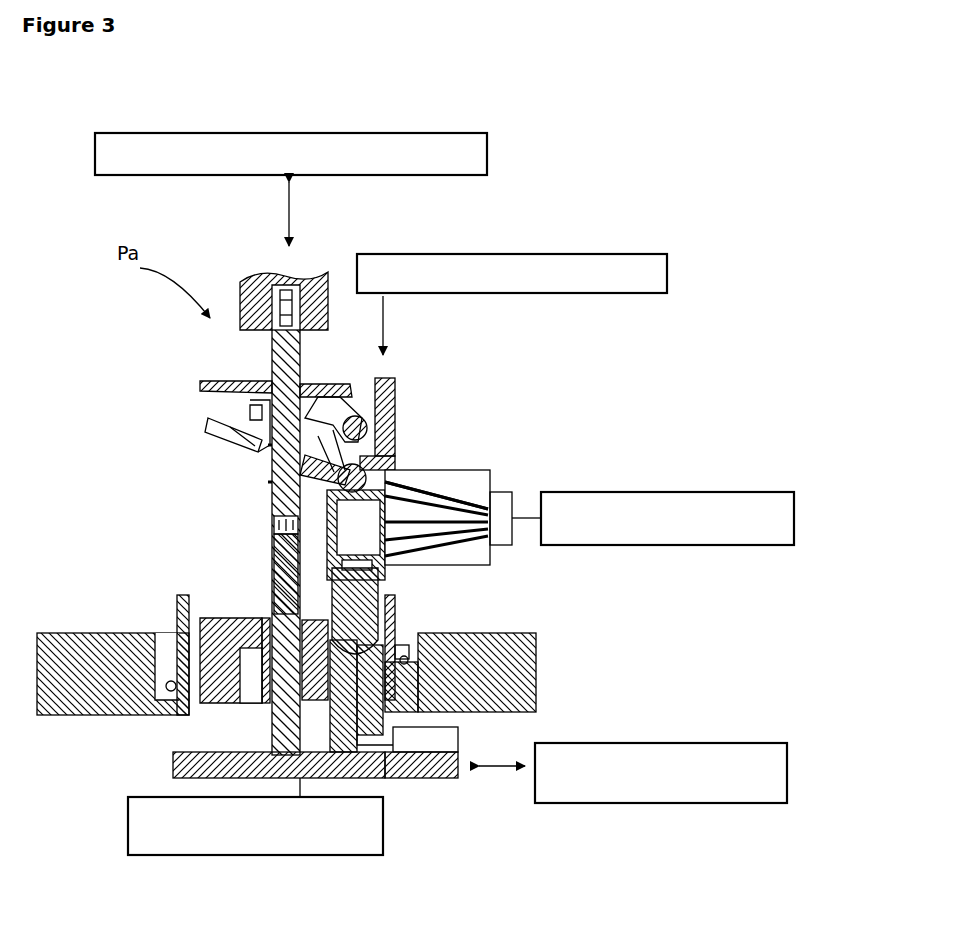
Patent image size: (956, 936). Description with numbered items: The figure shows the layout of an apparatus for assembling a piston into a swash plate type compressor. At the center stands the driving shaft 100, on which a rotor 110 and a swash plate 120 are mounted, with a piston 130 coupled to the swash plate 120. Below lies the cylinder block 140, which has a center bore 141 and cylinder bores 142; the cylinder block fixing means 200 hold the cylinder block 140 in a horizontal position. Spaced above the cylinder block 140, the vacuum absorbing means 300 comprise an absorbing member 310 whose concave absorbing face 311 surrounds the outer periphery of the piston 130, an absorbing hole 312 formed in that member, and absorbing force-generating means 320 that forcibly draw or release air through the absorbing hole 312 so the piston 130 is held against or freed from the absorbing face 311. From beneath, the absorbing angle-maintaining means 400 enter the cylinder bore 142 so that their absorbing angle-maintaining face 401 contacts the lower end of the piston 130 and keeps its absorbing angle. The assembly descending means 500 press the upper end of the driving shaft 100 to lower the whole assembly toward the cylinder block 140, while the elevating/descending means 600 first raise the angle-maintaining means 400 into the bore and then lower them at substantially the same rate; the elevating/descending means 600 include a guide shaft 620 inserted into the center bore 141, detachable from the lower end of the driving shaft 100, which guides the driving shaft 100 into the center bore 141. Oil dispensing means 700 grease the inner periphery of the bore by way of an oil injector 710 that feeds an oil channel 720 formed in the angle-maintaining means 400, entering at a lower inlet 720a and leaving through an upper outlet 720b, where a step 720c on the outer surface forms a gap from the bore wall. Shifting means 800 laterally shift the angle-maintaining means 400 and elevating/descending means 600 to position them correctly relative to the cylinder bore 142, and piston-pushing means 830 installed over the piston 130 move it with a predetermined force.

The driving shaft 100 is at (272, 352).
The rotor 110 is at (215, 380).
The swash plate 120 is at (238, 427).
The piston 130 is at (385, 470).
The cylinder block 140 is at (177, 604).
The center bore 141 is at (265, 690).
The cylinder bore 142 is at (393, 605).
The cylinder block fixing means 200 is at (532, 645).
The vacuum absorbing means 300 is at (810, 442).
The absorbing member 310 is at (472, 487).
The absorbing face 311 is at (472, 553).
The absorbing hole 312 is at (465, 470).
The absorbing force-generating means 320 is at (630, 492).
The absorbing angle-maintaining means 400 is at (382, 778).
The absorbing angle-maintaining face 401 is at (272, 545).
The assembly descending means 500 is at (322, 133).
The elevating/descending means 600 is at (322, 855).
The guide shaft 620 is at (272, 590).
The oil dispensing means 700 is at (684, 680).
The oil injector 710 is at (452, 741).
The oil channel 720 is at (395, 706).
The inlet 720a is at (393, 765).
The outlet 720b is at (362, 598).
The step 720c is at (275, 605).
The shifting means 800 is at (787, 760).
The piston-pushing means 830 is at (476, 254).